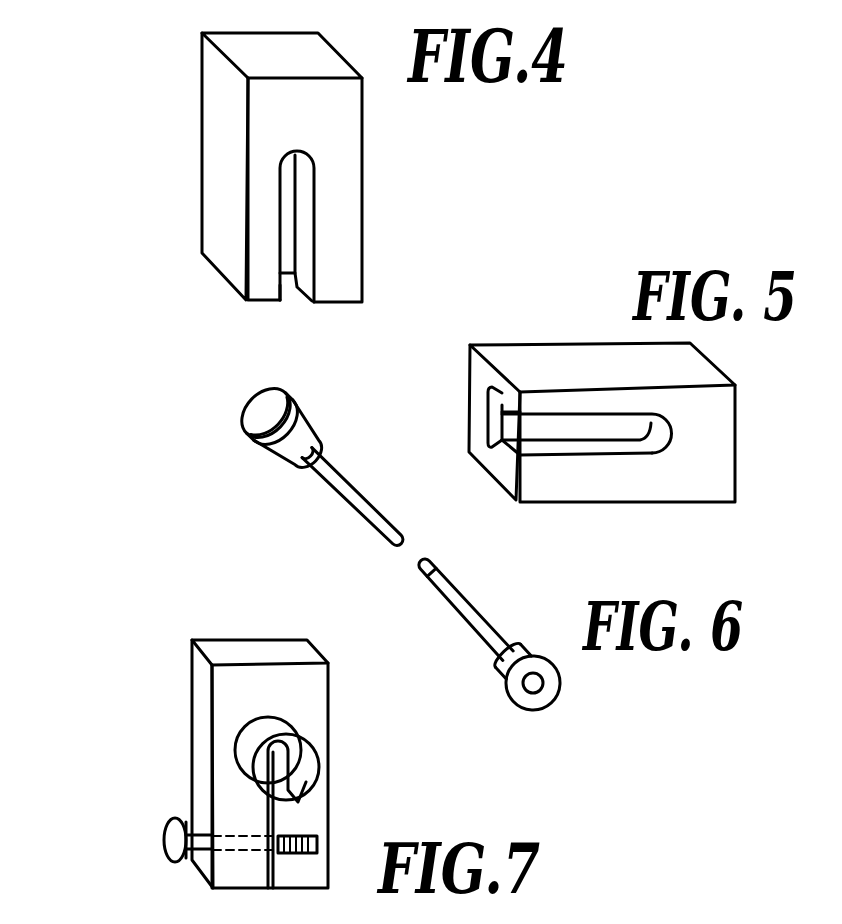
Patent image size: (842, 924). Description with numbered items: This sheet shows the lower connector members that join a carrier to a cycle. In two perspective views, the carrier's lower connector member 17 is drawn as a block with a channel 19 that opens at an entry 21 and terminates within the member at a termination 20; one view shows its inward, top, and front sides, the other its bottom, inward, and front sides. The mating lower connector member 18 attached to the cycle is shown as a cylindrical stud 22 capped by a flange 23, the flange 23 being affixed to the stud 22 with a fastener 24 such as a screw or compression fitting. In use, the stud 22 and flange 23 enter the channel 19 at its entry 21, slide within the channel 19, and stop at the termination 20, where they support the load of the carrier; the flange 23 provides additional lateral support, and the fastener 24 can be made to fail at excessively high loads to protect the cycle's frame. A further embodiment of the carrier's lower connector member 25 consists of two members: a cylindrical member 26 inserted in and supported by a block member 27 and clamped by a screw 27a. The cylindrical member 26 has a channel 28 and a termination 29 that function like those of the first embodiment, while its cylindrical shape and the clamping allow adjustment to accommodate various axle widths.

In FIG. 5, the lower connector member 17 is at (390, 243).
In FIG. 6, the mating lower connector member 18 is at (328, 546).
In FIG. 4, the channel 19 is at (292, 223).
In FIG. 5, the channel 19 is at (577, 430).
In FIG. 4, the termination 20 is at (312, 150).
In FIG. 5, the termination 20 is at (655, 437).
In FIG. 4, the entry 21 is at (289, 305).
In FIG. 5, the entry 21 is at (502, 425).
In FIG. 6, the cylindrical stud 22 is at (290, 448).
In FIG. 6, the flange 23 is at (255, 423).
In FIG. 6, the fastener 24 is at (532, 697).
In FIG. 7, the lower connector member 25 is at (177, 748).
In FIG. 7, the cylindrical member 26 is at (275, 727).
In FIG. 7, the block member 27 is at (270, 692).
In FIG. 7, the screw 27a is at (163, 840).
In FIG. 7, the channel 28 is at (293, 778).
In FIG. 6, the termination 29 is at (373, 512).
In FIG. 7, the termination 29 is at (297, 748).